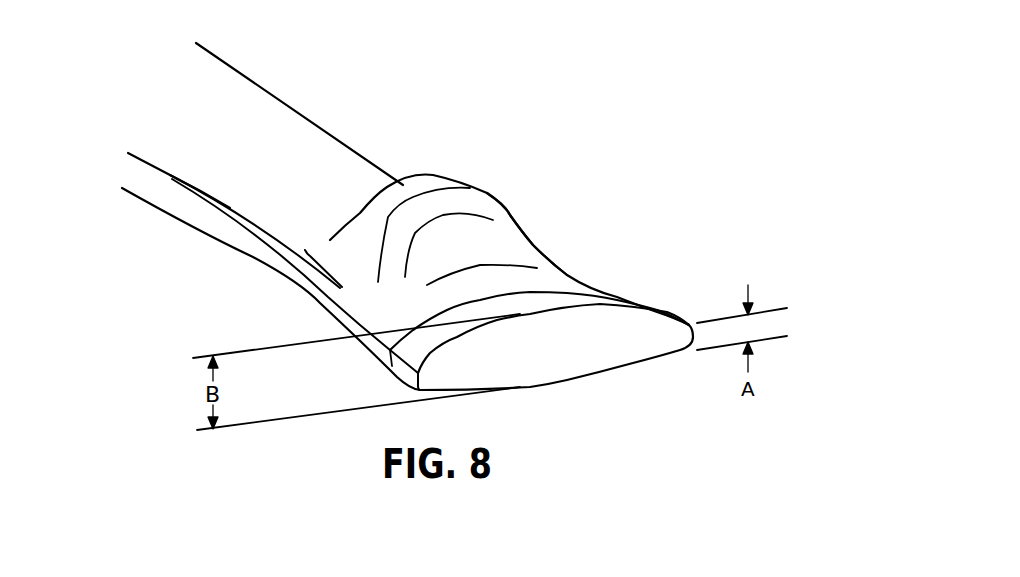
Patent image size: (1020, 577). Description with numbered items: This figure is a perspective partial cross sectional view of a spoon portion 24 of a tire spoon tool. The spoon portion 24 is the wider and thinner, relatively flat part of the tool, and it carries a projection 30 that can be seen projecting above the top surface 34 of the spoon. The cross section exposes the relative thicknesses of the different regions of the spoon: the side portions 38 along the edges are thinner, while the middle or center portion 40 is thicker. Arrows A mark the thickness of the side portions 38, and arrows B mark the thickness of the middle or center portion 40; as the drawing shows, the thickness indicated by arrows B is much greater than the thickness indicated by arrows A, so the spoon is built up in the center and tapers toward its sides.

The spoon portion 24 is at (443, 156).
The projection 30 is at (482, 192).
The top surface 34 is at (550, 256).
The side portions 38 is at (337, 330).
The middle or center portion 40 is at (547, 303).